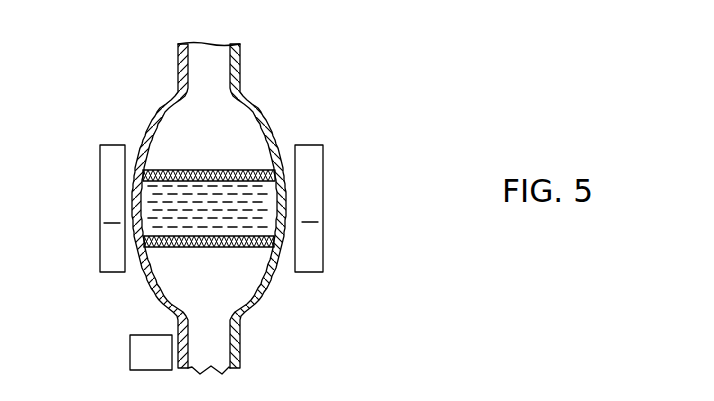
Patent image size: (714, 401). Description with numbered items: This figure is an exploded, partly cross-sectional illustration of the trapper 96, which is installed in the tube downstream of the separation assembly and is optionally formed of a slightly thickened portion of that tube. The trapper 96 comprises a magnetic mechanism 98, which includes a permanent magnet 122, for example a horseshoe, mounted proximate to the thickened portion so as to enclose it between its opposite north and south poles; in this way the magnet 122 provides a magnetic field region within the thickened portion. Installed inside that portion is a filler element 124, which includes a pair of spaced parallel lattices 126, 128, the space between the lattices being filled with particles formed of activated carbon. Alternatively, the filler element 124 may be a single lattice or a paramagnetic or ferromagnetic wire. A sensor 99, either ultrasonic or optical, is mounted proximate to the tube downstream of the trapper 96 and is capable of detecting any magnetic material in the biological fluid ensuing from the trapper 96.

The trapper 96 is at (290, 65).
The filler element 124 is at (180, 142).
The lattice 126 is at (237, 170).
The lattice 128 is at (225, 248).
The magnetic mechanism 98 is at (80, 195).
The permanent magnet 122 is at (107, 246).
The sensor 99 is at (138, 357).